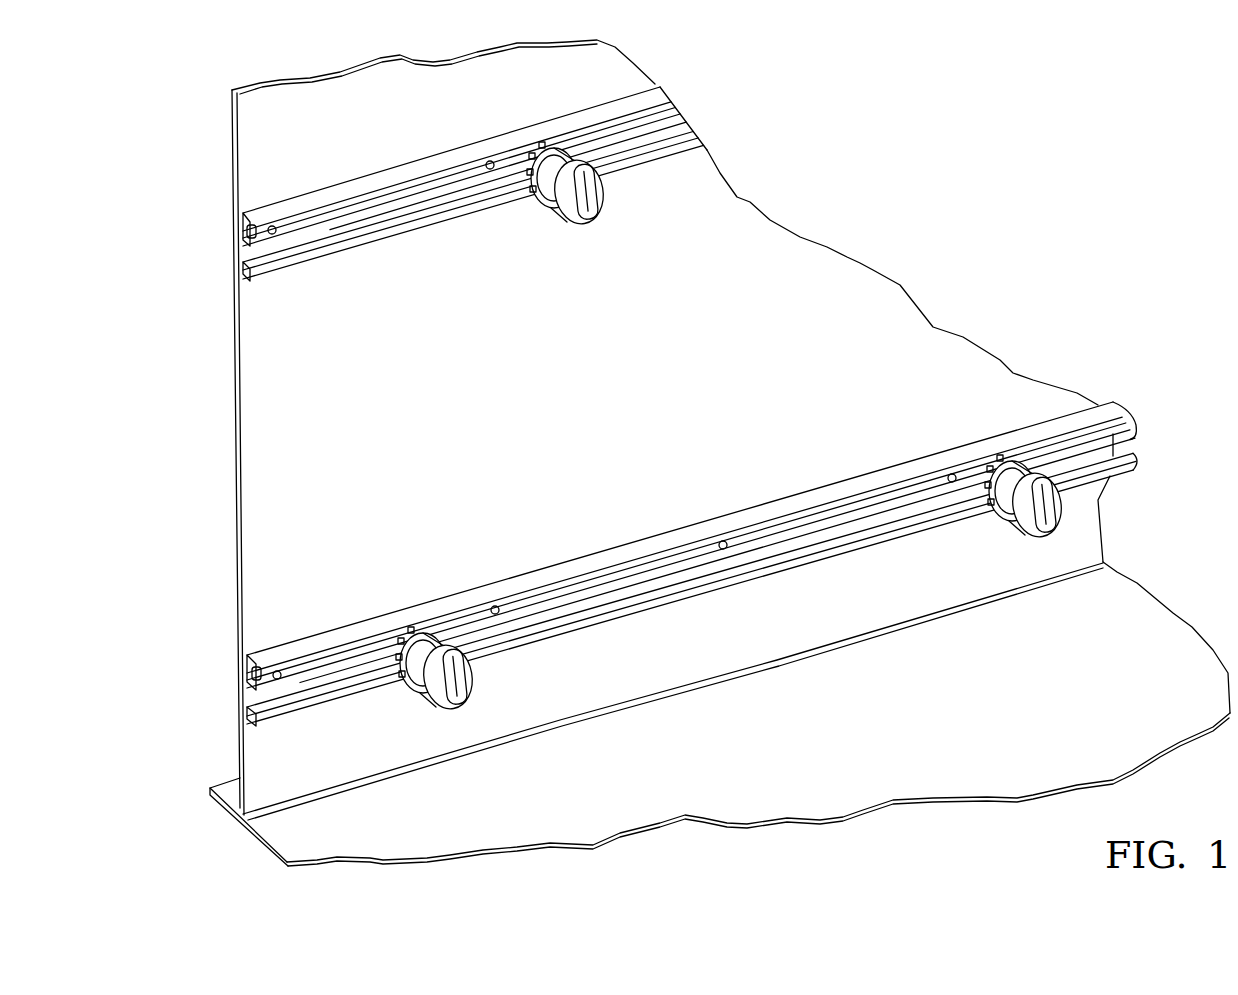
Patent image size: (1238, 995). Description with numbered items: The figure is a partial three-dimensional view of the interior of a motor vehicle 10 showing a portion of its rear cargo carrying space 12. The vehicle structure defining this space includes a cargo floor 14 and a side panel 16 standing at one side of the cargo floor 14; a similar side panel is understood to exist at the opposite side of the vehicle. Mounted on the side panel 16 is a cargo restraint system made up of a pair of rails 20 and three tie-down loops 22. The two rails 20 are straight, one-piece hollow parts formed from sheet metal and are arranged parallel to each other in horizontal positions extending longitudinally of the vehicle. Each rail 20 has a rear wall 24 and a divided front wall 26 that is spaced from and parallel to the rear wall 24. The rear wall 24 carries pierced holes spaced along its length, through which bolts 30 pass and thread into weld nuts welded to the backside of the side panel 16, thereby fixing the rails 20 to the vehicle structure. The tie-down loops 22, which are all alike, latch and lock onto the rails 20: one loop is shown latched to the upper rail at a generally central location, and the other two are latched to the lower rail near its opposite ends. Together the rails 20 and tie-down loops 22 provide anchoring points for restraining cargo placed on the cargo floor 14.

The motor vehicle 10 is at (772, 221).
The rear cargo carrying space 12 is at (1173, 618).
The cargo floor 14 is at (817, 793).
The side panel 16 is at (286, 375).
The rail 20 is at (473, 224).
The tie-down loop 22 is at (598, 230).
The rear wall 24 is at (238, 237).
The divided front wall 26 is at (370, 243).
The bolt 30 is at (278, 235).